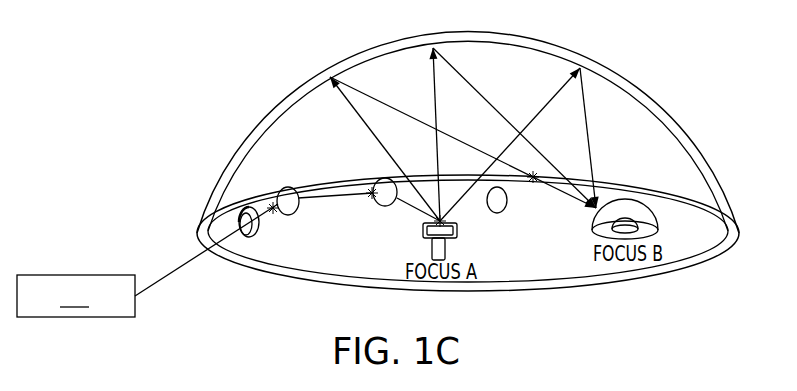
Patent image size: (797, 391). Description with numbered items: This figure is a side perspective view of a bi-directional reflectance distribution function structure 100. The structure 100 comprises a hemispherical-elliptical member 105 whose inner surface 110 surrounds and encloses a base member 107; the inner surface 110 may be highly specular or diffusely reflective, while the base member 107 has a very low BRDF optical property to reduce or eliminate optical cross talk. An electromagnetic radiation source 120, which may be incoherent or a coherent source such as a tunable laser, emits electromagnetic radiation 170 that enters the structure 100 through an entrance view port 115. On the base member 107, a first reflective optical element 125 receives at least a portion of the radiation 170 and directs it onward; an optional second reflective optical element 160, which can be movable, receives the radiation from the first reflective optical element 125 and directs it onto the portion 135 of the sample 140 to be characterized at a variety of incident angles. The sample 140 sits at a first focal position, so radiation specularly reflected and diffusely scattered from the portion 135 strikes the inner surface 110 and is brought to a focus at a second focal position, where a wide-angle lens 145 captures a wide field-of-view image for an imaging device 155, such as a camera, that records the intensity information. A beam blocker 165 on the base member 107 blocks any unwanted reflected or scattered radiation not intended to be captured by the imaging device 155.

The bi-directional reflectance distribution function structure 100 is at (145, 80).
The hemispherical-elliptical member 105 is at (640, 78).
The base member 107 is at (636, 283).
The inner surface 110 is at (650, 108).
The entrance view port 115 is at (230, 210).
The electromagnetic radiation source 120 is at (76, 296).
The first reflective optical element 125 is at (287, 187).
The portion of sample 135 is at (408, 241).
The sample 140 is at (457, 231).
The wide-angle lens 145 is at (633, 202).
The imaging device 155 is at (636, 222).
The second reflective optical element 160 is at (387, 178).
The beam blocker 165 is at (508, 203).
The electromagnetic radiation 170 is at (153, 286).